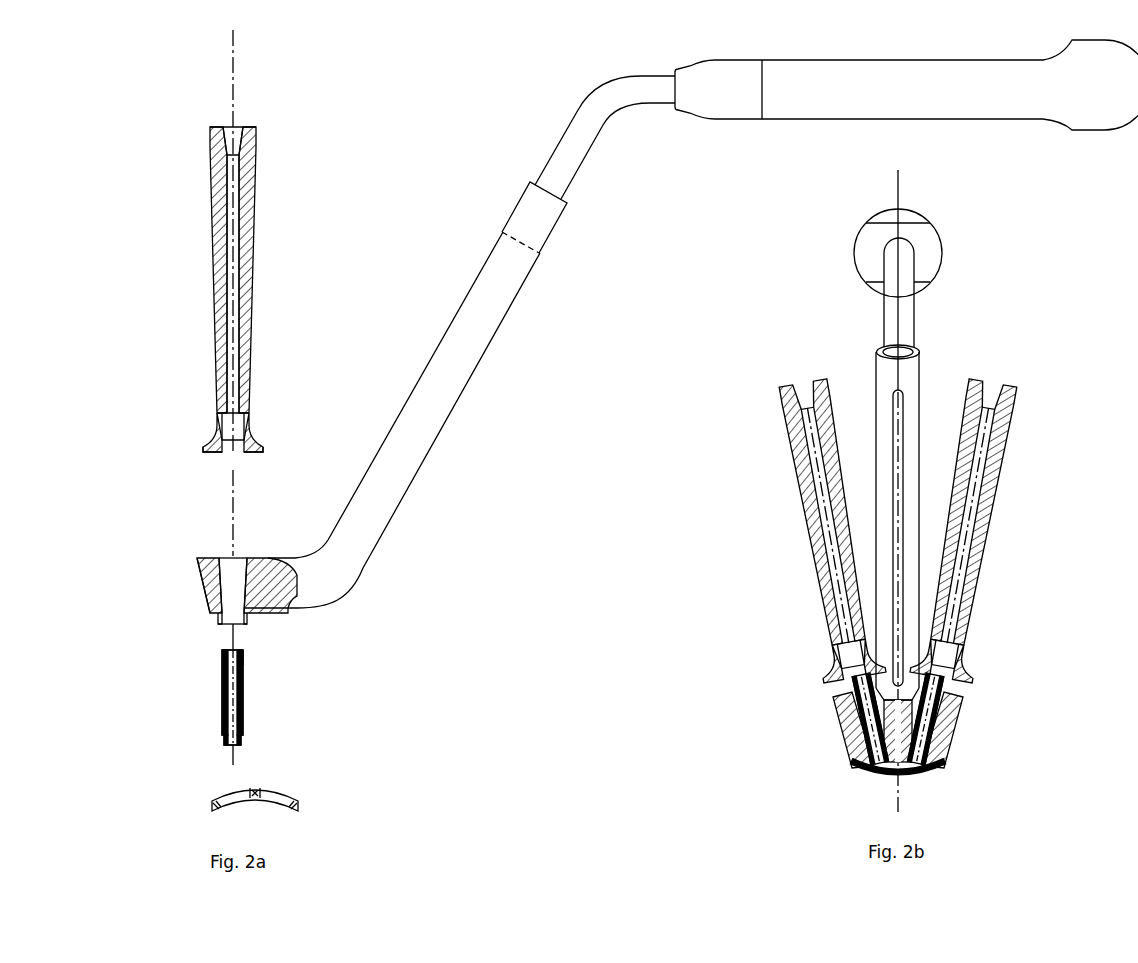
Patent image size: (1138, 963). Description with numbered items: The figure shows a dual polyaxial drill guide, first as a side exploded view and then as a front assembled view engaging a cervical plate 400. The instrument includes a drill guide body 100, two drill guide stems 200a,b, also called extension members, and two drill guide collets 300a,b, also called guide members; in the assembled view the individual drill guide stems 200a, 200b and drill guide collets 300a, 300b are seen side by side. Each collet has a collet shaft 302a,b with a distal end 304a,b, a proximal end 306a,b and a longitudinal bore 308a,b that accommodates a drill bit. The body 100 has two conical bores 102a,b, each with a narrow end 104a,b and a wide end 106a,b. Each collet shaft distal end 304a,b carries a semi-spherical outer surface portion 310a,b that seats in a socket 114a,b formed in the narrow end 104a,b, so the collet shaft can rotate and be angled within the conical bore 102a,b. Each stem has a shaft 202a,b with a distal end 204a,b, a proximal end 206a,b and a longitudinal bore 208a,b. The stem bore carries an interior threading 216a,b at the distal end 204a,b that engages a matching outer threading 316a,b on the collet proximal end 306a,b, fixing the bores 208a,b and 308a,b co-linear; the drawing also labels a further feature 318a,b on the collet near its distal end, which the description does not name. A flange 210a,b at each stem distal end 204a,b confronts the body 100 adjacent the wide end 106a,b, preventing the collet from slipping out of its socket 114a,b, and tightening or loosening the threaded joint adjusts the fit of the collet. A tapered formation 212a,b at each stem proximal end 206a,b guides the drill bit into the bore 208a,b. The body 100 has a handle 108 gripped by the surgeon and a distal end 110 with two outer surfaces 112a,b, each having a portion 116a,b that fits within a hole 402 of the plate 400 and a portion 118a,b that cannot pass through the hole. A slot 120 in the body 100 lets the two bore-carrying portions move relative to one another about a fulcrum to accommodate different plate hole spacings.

In FIG. 2A, the drill guide body 100 is at (188, 551).
In FIG. 2B, the drill guide body 100 is at (831, 717).
In FIG. 2A, the conical bores 102a,b is at (222, 589).
In FIG. 2A, the conical bore narrow ends 104a,b is at (227, 633).
In FIG. 2A, the conical bore wide ends 106a,b is at (255, 556).
In FIG. 2A, the handle 108 is at (728, 122).
In FIG. 2B, the handle 108 is at (853, 248).
In FIG. 2A, the distal end 110 is at (212, 634).
In FIG. 2A, the distal end outer surfaces 112a,b is at (252, 618).
In FIG. 2A, the sockets 114a,b is at (242, 629).
In FIG. 2A, the fitting portions 116a,b is at (216, 623).
In FIG. 2A, the non-fitting portions 118a,b is at (206, 609).
In FIG. 2B, the slot 120 is at (902, 598).
In FIG. 2A, the drill guide stems 200a,b is at (190, 130).
In FIG. 2B, the drill guide stem 200a is at (800, 488).
In FIG. 2B, the drill guide stem 200b is at (996, 512).
In FIG. 2A, the stem shafts 202a,b is at (249, 226).
In FIG. 2A, the stem shaft distal ends 204a,b is at (272, 429).
In FIG. 2A, the stem shaft proximal ends 206a,b is at (270, 141).
In FIG. 2A, the stem shaft longitudinal bores 208a,b is at (234, 292).
In FIG. 2A, the flanges 210a,b is at (266, 450).
In FIG. 2A, the formations 212a,b is at (224, 138).
In FIG. 2A, the interior threading 216a,b is at (221, 417).
In FIG. 2A, the drill guide collets 300a,b is at (200, 693).
In FIG. 2B, the drill guide collet 300a is at (848, 748).
In FIG. 2B, the drill guide collet 300b is at (950, 740).
In FIG. 2A, the collet shafts 302a,b is at (244, 704).
In FIG. 2A, the collet shaft distal ends 304a,b is at (268, 738).
In FIG. 2A, the collet shaft proximal ends 306a,b is at (258, 648).
In FIG. 2A, the collet shaft longitudinal bores 308a,b is at (221, 718).
In FIG. 2A, the semi-spherical outer surface portions 310a,b is at (246, 742).
In FIG. 2A, the outer threading 316a,b is at (246, 662).
In FIG. 2A, the distal shoulder 318a,b is at (244, 737).
In FIG. 2A, the plate 400 is at (306, 797).
In FIG. 2B, the plate 400 is at (946, 773).
In FIG. 2A, the holes 402 is at (228, 795).